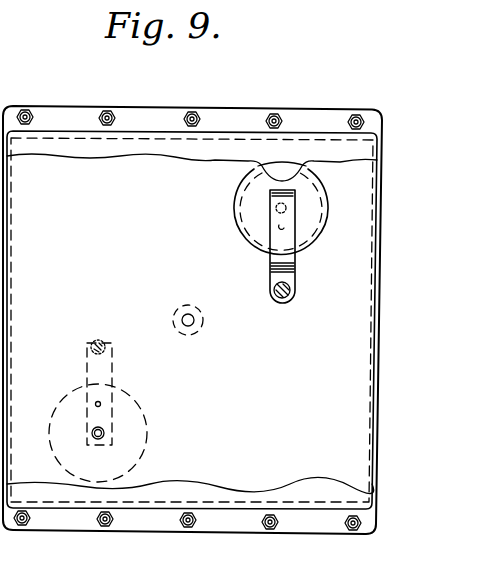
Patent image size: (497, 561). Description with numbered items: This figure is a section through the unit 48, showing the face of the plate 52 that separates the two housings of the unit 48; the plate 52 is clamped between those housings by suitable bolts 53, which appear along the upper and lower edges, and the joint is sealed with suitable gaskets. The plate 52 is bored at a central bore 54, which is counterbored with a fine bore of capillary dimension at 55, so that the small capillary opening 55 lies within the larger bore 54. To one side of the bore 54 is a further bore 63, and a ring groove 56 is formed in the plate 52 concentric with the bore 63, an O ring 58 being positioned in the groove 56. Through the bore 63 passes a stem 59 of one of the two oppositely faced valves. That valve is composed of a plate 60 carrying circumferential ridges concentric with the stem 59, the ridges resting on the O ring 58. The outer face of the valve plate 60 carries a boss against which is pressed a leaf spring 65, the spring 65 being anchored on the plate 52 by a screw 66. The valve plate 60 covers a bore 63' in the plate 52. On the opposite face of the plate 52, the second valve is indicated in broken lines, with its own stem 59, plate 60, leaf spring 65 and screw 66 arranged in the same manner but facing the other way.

The unit 48 is at (88, 72).
The plate 52 is at (108, 189).
The bolts 53 is at (197, 116).
The bore 54 is at (204, 320).
The fine bore of capillary dimension 55 is at (188, 313).
The ring groove 56 is at (250, 163).
The O ring 58 is at (310, 165).
The stem 59 is at (276, 210).
The plate 60 is at (234, 200).
The bore 63 is at (245, 242).
The bore 63' is at (138, 393).
The leaf spring 65 is at (270, 268).
The screw 66 is at (272, 291).